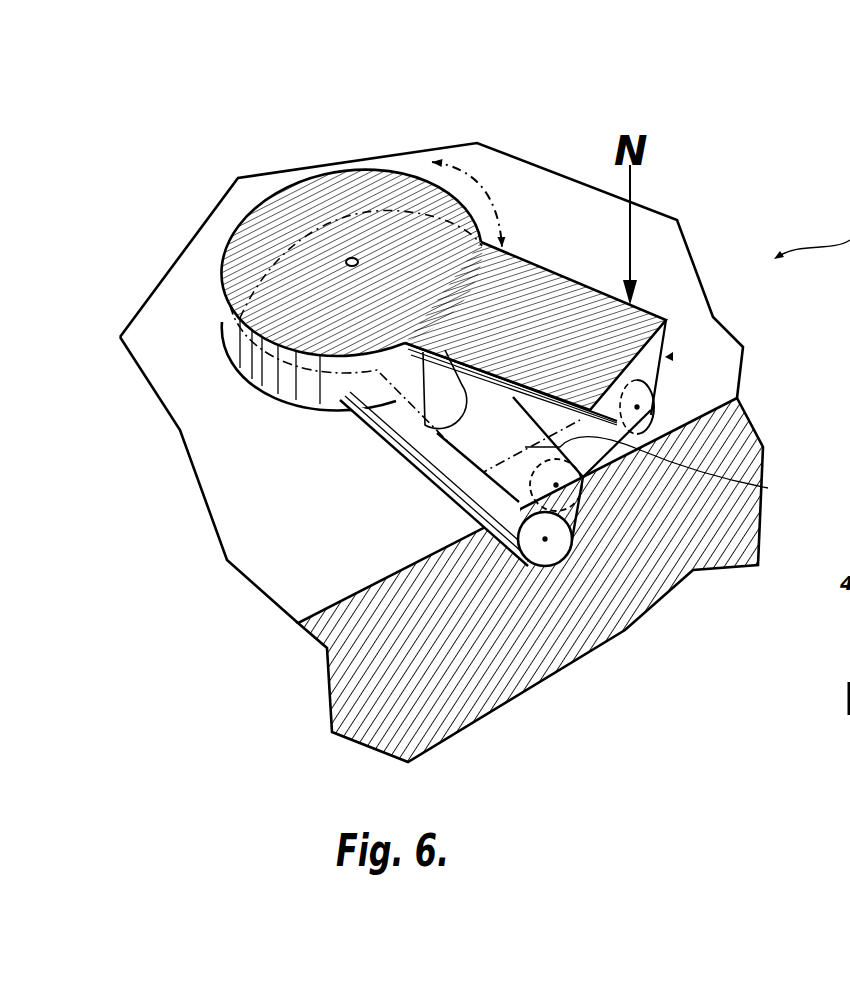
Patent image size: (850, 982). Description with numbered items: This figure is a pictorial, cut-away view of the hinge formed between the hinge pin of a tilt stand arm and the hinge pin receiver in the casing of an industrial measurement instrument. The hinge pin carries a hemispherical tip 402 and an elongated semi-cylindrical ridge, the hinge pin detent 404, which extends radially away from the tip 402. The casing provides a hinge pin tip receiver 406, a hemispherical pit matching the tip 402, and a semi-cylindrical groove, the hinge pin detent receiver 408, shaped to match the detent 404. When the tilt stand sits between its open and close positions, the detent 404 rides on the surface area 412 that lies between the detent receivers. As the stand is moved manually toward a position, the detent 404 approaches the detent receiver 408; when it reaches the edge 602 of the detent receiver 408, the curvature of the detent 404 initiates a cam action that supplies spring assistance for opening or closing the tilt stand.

The hemispherical tip 402 is at (322, 193).
The hinge pin detent 404 is at (547, 290).
The hinge pin tip receiver 406 is at (272, 372).
The hinge pin detent receiver 408 is at (450, 497).
The surface area 412 is at (675, 258).
The edge 602 is at (392, 452).